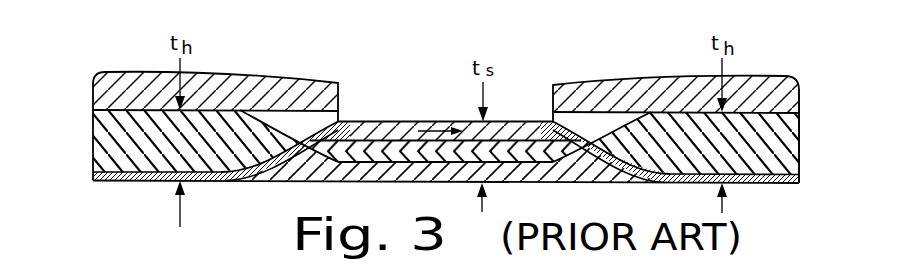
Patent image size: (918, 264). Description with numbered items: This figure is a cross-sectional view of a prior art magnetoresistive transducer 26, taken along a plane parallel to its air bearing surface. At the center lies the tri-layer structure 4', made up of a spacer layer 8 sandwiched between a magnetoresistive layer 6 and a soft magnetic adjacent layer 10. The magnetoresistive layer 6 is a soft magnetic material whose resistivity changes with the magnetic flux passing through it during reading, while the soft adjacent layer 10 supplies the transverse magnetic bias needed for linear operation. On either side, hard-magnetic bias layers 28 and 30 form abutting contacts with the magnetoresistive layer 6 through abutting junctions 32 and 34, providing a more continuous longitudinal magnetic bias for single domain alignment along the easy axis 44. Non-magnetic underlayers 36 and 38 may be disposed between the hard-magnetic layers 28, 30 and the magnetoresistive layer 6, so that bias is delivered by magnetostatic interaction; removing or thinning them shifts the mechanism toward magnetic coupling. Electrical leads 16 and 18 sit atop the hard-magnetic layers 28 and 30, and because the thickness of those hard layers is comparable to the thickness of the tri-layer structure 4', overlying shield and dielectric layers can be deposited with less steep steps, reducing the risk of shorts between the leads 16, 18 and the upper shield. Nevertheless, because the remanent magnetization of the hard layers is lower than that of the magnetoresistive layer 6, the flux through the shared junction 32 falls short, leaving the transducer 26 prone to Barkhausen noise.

The tri-layer structure 4' is at (446, 199).
The magnetoresistive layer 6 is at (398, 128).
The spacer layer 8 is at (367, 150).
The soft magnetic adjacent layer 10 is at (374, 170).
The electrical lead 16 is at (230, 80).
The electrical lead 18 is at (620, 87).
The transducer 26 is at (795, 60).
The hard-magnetic bias layer 28 is at (110, 135).
The hard-magnetic bias layer 30 is at (786, 143).
The abutting junction 32 is at (258, 162).
The abutting junction 34 is at (655, 170).
The non-magnetic underlayer 36 is at (93, 176).
The non-magnetic underlayer 38 is at (797, 180).
The easy axis 44 is at (430, 123).